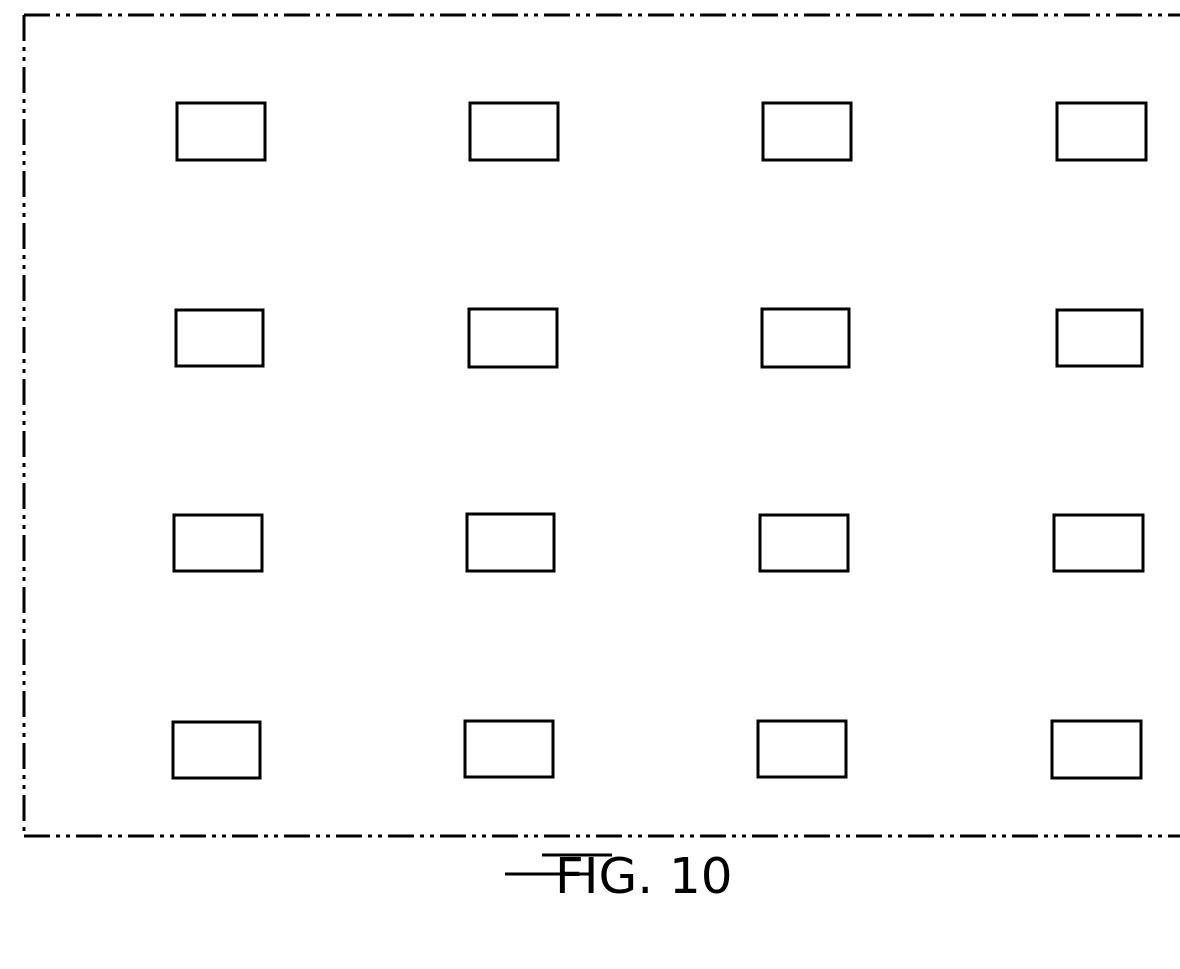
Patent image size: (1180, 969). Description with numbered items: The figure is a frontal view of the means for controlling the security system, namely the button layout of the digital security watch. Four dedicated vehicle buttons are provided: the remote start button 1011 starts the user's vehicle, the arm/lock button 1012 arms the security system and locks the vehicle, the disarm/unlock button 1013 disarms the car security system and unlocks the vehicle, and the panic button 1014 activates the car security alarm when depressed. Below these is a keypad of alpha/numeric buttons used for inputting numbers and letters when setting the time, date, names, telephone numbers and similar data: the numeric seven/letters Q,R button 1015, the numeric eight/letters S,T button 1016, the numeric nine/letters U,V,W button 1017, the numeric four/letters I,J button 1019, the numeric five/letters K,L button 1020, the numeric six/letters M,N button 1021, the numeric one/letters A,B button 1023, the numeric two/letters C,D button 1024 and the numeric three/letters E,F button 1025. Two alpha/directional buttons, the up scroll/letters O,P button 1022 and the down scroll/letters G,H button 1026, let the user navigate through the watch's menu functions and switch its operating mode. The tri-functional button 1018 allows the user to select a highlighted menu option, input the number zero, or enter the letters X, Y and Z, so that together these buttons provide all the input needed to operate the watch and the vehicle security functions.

The remote start button 1011 is at (177, 126).
The arm/lock button 1012 is at (470, 128).
The disarm/unlock button 1013 is at (763, 130).
The panic button 1014 is at (1057, 133).
The numeric 7/letters Q,R button 1015 is at (176, 332).
The numeric 8/letters S,T button 1016 is at (469, 332).
The numeric 9/letters U,V,W button 1017 is at (762, 328).
The tri-functional button 1018 is at (1057, 330).
The numeric 4/letters I,J button 1019 is at (174, 527).
The numeric 5/letters K,L button 1020 is at (467, 534).
The numeric 6/letters M,N button 1021 is at (760, 538).
The up scroll/letters O,P button 1022 is at (1054, 543).
The numeric 1/letters A,B button 1023 is at (173, 737).
The numeric 2/letters C,D button 1024 is at (465, 735).
The numeric 3/letters E,F button 1025 is at (758, 745).
The down scroll/letters G,H button 1026 is at (1052, 741).